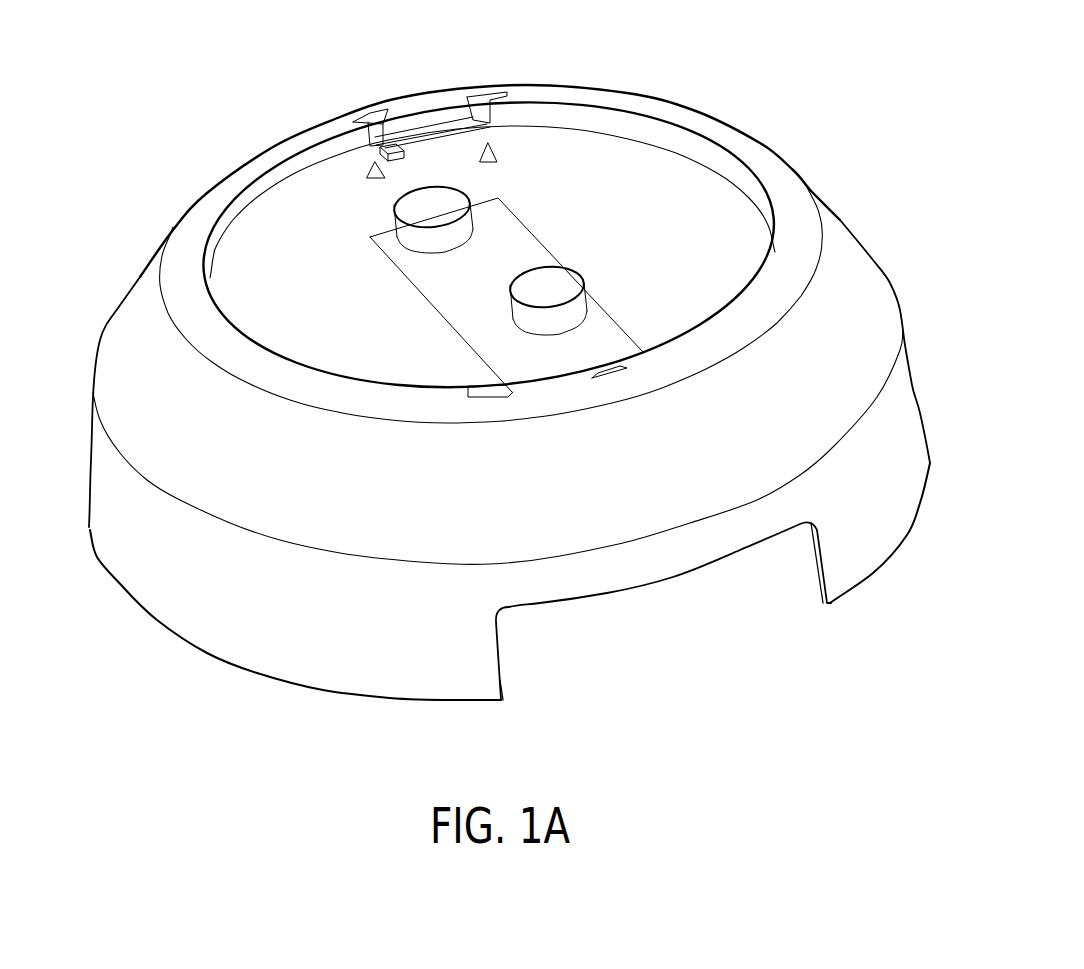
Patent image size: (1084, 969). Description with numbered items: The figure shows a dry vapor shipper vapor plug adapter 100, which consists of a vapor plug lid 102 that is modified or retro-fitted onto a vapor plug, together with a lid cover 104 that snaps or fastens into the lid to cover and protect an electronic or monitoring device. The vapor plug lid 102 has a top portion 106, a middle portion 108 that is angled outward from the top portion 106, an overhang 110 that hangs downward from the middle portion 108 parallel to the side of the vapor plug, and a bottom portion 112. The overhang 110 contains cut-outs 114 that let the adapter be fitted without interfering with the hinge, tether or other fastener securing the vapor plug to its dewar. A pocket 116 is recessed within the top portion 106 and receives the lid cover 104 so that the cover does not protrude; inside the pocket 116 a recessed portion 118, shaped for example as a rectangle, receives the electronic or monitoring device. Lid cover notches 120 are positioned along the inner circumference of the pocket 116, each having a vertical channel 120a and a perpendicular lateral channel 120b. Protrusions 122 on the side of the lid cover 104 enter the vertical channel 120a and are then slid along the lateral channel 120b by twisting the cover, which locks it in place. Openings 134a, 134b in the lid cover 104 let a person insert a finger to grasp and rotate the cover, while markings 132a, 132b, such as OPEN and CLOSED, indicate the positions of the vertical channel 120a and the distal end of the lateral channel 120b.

The vapor plug adapter 100 is at (108, 124).
The vapor plug lid 102 is at (887, 310).
The lid cover 104 is at (260, 240).
The top portion 106 is at (803, 223).
The middle portion 108 is at (128, 323).
The overhang 110 is at (149, 602).
The bottom portion 112 is at (670, 636).
The cut-outs 114 is at (502, 678).
The pocket 116 is at (740, 190).
The recessed portion 118 is at (545, 372).
The lid cover notches 120 is at (377, 130).
The vertical channel 120a is at (371, 121).
The lateral channel 120b is at (487, 113).
The protrusions 122 is at (378, 146).
The marking 132a is at (373, 182).
The marking 132b is at (497, 161).
The opening 134a is at (413, 243).
The opening 134b is at (573, 278).